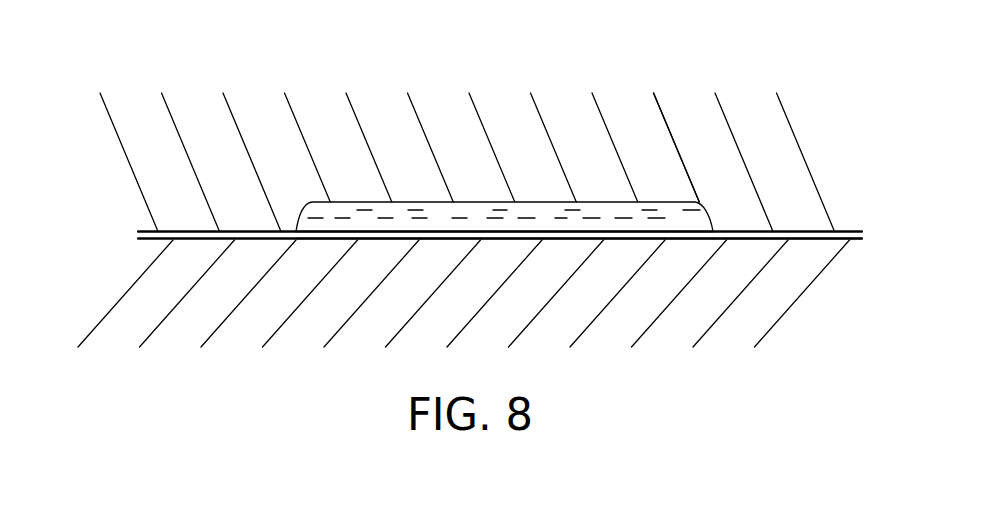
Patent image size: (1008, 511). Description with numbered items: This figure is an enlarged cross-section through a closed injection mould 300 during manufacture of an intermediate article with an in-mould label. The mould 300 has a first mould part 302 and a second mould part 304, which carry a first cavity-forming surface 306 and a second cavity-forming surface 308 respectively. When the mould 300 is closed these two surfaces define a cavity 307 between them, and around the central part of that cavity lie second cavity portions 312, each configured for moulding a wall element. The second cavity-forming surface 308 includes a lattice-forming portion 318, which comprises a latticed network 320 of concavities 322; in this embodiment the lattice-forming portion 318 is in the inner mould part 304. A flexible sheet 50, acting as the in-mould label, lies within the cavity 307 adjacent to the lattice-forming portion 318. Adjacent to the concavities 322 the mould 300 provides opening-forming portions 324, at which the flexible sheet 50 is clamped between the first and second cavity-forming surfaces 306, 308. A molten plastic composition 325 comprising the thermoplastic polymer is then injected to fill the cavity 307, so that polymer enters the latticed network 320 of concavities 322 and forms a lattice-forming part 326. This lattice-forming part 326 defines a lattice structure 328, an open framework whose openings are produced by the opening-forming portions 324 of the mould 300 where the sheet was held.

The mould 300 is at (115, 81).
The first mould part 302 is at (135, 317).
The second mould part 304 is at (183, 113).
The first cavity-forming surface 306 is at (242, 240).
The cavity 307 is at (488, 217).
The second cavity-forming surface 308 is at (360, 198).
The second cavity portions 312 is at (422, 198).
The lattice-forming portion 318 is at (548, 198).
The latticed network 320 is at (612, 198).
The concavities 322 is at (668, 207).
The opening-forming portions 324 is at (735, 240).
The molten plastic composition 325 is at (443, 215).
The lattice-forming part 326 is at (568, 218).
The lattice structure 328 is at (677, 202).
The flexible sheet 50 is at (790, 231).